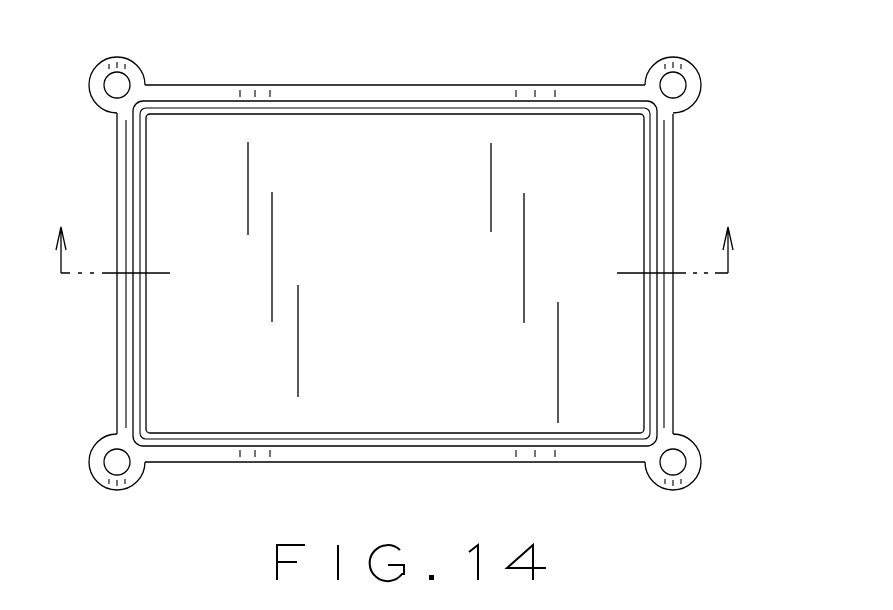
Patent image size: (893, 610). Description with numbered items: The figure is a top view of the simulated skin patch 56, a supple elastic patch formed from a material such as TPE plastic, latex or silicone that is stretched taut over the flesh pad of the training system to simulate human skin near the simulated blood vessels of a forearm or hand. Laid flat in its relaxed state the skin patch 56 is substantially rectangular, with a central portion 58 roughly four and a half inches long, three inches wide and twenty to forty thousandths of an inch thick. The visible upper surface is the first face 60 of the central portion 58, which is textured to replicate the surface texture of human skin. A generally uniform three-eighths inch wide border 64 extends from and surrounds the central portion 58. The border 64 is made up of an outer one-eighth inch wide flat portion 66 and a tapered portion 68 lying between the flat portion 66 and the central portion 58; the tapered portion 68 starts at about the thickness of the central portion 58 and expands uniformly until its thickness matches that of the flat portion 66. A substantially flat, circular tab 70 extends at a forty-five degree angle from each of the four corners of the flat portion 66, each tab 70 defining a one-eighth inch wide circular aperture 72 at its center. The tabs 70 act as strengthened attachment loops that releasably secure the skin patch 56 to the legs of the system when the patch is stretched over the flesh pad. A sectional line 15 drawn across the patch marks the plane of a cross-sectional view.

The sectional line 15 is at (398, 235).
The simulated skin patch 56 is at (676, 177).
The central portion 58 is at (512, 133).
The first face 60 is at (380, 153).
The border 64 is at (672, 358).
The flat portion 66 is at (664, 318).
The tapered portion 68 is at (650, 392).
The tab 70 is at (98, 107).
The circular aperture 72 is at (112, 80).